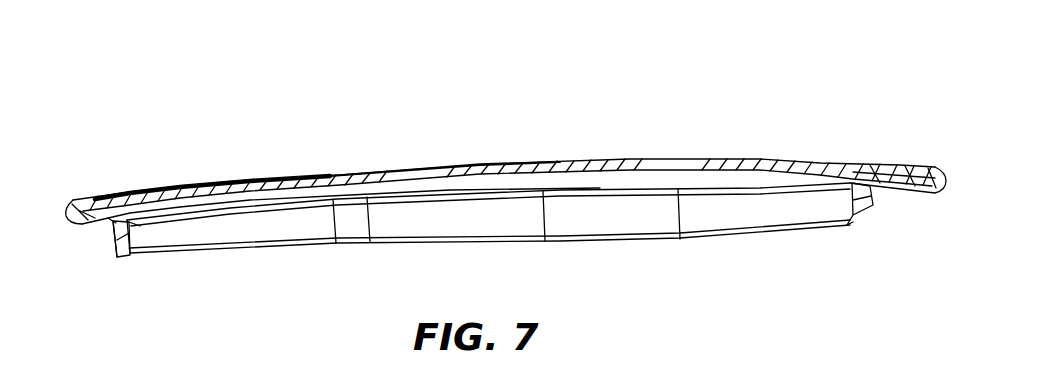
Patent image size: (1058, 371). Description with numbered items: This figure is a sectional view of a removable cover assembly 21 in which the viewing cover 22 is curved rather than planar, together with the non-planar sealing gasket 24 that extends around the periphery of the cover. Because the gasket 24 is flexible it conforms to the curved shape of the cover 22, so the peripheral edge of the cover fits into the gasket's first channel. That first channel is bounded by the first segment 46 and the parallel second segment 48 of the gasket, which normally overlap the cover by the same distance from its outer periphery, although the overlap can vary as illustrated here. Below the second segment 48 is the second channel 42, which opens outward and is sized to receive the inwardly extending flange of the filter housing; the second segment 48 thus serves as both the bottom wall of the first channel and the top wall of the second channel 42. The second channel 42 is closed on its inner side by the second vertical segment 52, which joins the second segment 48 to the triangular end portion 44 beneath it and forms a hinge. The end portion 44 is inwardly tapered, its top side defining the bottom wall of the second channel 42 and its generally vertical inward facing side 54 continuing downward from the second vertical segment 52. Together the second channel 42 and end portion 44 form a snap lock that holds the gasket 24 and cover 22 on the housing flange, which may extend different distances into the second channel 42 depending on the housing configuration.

The removable cover assembly 21 is at (416, 134).
The viewing cover 22 is at (498, 170).
The sealing gasket 24 is at (179, 182).
The second channel 42 is at (113, 224).
The end portion 44 is at (132, 254).
The first segment 46 is at (101, 206).
The second segment 48 is at (125, 222).
The second vertical segment 52 is at (133, 227).
The inward facing side 54 is at (233, 232).